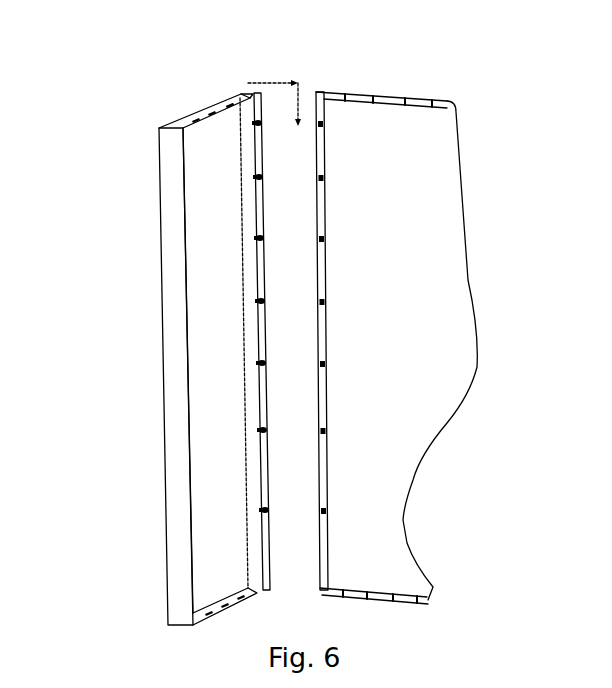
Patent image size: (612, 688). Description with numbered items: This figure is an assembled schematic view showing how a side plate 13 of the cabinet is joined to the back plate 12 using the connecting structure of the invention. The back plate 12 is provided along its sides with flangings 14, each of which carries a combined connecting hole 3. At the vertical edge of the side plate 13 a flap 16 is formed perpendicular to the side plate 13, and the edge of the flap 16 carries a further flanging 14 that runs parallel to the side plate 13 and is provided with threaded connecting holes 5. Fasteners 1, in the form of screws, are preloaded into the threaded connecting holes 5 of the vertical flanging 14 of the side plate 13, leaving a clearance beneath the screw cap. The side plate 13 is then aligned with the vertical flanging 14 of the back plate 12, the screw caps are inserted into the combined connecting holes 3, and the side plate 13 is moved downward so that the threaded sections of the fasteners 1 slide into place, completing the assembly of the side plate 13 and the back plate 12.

The fastener 1 is at (258, 121).
The combined connecting hole 3 is at (228, 99).
The threaded connecting hole 5 is at (259, 236).
The back plate 12 is at (422, 248).
The side plate 13 is at (203, 268).
The flanging 14 is at (203, 112).
The flap 16 is at (248, 90).